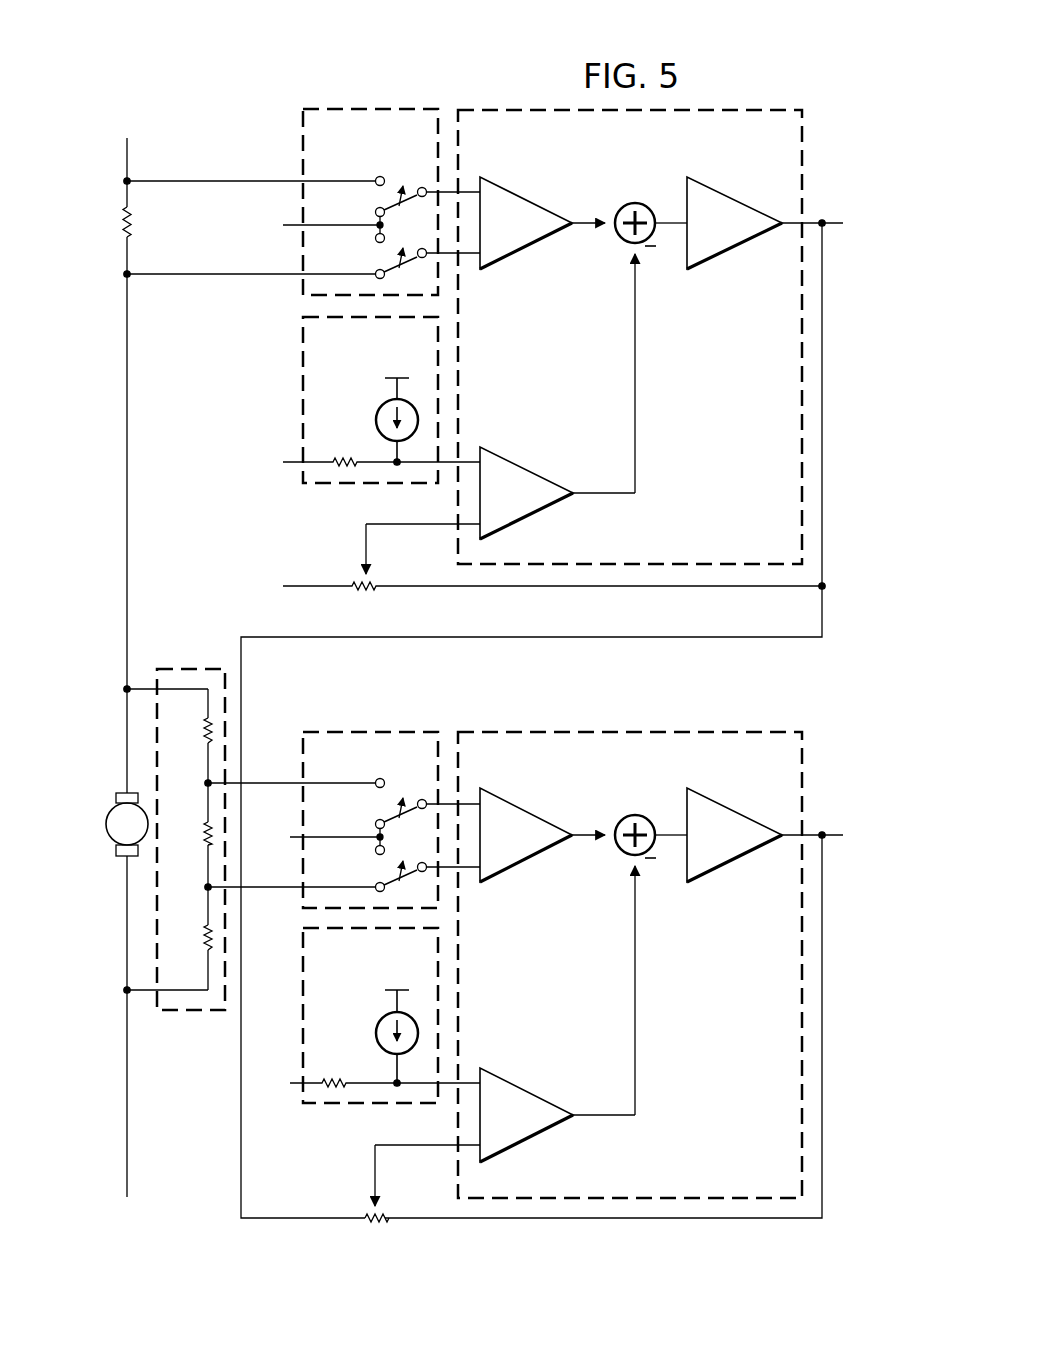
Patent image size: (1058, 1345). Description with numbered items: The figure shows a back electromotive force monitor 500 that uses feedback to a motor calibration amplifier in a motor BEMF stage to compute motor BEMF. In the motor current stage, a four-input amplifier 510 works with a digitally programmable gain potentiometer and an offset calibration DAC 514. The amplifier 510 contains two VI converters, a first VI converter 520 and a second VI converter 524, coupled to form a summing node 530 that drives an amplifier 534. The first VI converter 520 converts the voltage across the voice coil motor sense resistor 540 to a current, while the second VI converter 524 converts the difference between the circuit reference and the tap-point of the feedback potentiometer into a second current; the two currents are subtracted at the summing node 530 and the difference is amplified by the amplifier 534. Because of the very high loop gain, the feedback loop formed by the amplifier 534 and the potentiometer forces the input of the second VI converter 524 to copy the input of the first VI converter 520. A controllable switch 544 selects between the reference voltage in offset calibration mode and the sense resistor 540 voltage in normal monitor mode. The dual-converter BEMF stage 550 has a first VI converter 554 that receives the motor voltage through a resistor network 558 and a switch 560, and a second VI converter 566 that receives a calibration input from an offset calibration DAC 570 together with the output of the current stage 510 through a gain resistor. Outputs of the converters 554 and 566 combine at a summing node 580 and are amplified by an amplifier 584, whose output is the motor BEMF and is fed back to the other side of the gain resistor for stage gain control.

The back electromotive force monitor 500 is at (195, 86).
The 4-input amplifier 510 is at (767, 106).
The offset calibration DAC 514 is at (297, 351).
The first VI converter 520 is at (527, 248).
The second VI converter 524 is at (527, 518).
The summing node 530 is at (622, 247).
The amplifier 534 is at (735, 248).
The voice coil motor sense resistor 540 is at (131, 224).
The controllable switch 544 is at (297, 141).
The BEMF stage 550 is at (769, 729).
The first VI converter 554 is at (527, 860).
The resistor network 558 is at (190, 666).
The switch 560 is at (330, 727).
The second VI converter 566 is at (527, 1140).
The offset calibration DAC 570 is at (331, 1107).
The summing node 580 is at (622, 859).
The amplifier 584 is at (735, 860).